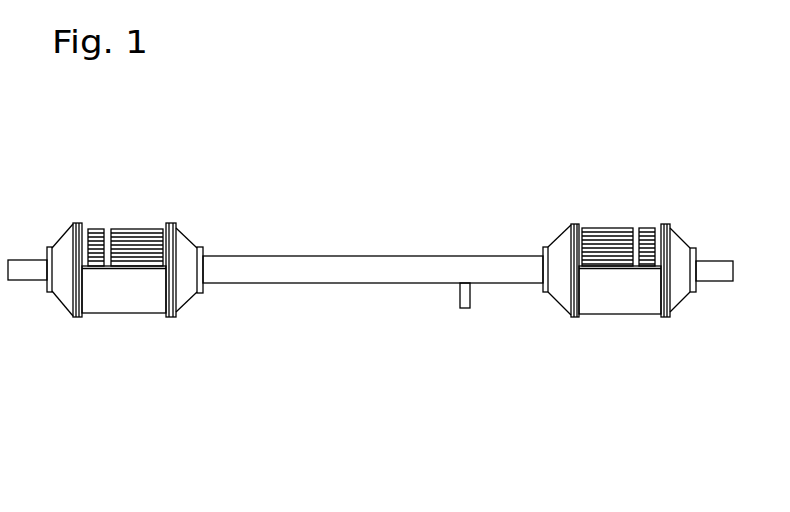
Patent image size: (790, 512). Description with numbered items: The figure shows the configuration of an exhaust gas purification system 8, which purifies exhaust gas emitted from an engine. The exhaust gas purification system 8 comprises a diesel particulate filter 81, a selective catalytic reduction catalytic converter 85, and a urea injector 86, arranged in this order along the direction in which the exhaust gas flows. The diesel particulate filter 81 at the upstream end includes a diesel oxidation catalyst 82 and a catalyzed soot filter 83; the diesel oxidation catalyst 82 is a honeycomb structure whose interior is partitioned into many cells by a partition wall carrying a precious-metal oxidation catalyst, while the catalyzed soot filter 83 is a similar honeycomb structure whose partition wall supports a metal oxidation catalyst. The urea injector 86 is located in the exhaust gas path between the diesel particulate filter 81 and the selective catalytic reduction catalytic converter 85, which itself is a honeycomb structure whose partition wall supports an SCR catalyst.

The exhaust gas purification system 8 is at (272, 174).
The diesel particulate filter (DPF) 81 is at (140, 385).
The diesel oxidation catalyst (DOC) 82 is at (92, 262).
The catalyzed soot filter (CSF) 83 is at (138, 260).
The selective catalytic reduction (SCR) catalytic converter 85 is at (615, 327).
The urea injector 86 is at (460, 292).